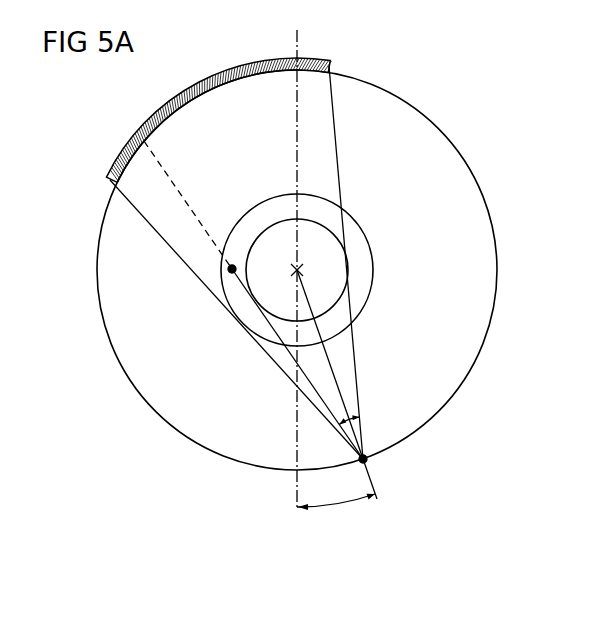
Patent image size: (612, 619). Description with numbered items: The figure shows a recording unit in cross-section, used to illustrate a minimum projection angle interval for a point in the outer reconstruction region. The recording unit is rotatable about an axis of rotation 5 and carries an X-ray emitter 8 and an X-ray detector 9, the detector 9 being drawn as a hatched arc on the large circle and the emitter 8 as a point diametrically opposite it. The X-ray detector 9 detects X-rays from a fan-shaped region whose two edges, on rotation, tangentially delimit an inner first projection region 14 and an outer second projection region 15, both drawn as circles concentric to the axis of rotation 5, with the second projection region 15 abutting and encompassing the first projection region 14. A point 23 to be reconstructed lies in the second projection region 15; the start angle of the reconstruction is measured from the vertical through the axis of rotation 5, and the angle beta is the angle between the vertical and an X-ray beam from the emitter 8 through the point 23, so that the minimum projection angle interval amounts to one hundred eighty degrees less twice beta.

The X-ray detector 9 is at (192, 90).
The axis of rotation 5 is at (300, 270).
The point which is to be reconstructed 23 is at (232, 272).
The second projection region 15 is at (360, 270).
The first projection region 14 is at (323, 293).
The X-ray emitter 8 is at (366, 461).